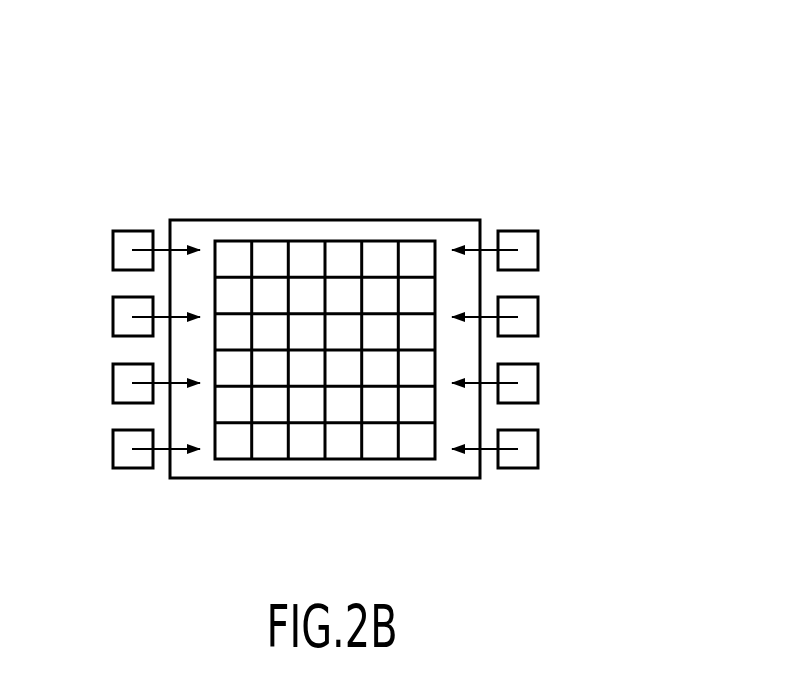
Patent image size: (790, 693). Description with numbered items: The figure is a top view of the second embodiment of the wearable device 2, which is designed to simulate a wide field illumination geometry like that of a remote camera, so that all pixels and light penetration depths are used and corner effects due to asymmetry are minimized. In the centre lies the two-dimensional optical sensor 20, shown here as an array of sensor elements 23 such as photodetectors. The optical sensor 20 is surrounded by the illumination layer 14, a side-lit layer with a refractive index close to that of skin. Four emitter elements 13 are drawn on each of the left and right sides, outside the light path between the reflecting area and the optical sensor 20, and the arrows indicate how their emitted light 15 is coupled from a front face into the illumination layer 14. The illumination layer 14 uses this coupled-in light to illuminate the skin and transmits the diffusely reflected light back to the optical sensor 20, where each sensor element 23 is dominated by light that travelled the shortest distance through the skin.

The wearable device 2 is at (622, 90).
The emitter element 13 is at (119, 229).
The illumination layer 14 is at (410, 232).
The emitted light 15 is at (163, 452).
The 2D optical sensor 20 is at (303, 240).
The sensor element 23 is at (380, 443).